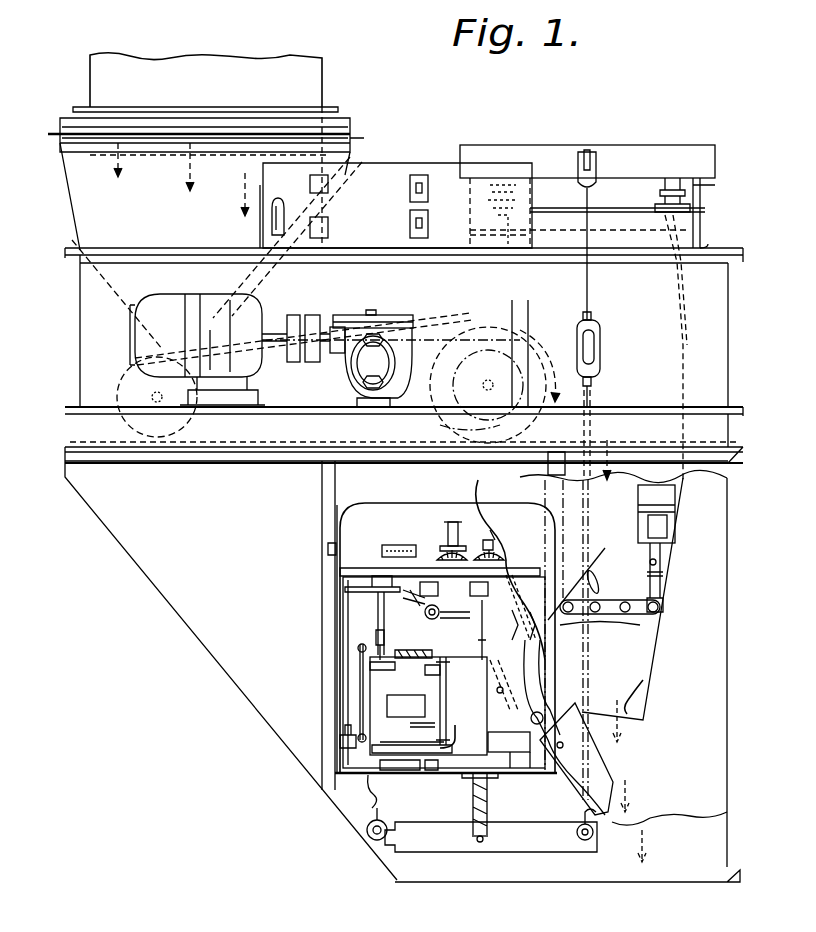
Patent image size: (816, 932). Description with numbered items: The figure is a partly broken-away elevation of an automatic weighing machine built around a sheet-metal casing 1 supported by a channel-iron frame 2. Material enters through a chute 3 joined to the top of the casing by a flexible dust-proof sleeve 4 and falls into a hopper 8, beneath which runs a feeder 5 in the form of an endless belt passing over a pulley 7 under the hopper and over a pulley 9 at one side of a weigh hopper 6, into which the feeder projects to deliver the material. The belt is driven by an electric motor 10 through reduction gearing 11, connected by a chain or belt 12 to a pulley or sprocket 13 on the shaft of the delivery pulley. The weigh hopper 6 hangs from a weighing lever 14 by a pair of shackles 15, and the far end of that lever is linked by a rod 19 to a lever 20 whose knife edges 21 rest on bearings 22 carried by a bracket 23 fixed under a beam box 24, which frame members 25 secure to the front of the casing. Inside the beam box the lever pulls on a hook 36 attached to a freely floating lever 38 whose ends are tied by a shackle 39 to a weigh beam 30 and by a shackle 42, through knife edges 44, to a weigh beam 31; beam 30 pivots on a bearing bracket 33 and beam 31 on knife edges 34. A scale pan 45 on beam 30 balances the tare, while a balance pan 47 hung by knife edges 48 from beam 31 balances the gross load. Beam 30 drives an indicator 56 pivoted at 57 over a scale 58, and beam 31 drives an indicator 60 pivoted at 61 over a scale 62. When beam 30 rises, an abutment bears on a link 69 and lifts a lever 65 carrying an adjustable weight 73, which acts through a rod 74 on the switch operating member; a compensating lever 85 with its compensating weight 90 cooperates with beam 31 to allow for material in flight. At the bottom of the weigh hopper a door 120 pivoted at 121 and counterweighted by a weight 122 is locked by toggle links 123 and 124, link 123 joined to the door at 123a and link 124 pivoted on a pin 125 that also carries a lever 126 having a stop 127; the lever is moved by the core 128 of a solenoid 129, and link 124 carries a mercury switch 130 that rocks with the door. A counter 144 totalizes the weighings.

The casing 1 is at (92, 500).
The frame 2 is at (66, 422).
The chute 3 is at (323, 84).
The flexible dust-proof sleeve 4 is at (330, 130).
The feeder 5 is at (475, 318).
The weigh hopper 6 is at (656, 666).
The pulley 7 is at (122, 369).
The hopper 8 is at (252, 282).
The pulley 9 is at (546, 390).
The electric motor 10 is at (176, 306).
The reduction gearing 11 is at (340, 368).
The chain or belt 12 is at (452, 350).
The pulley or sprocket 13 is at (442, 425).
The weighing lever 14 is at (653, 150).
The shackles 15 is at (520, 192).
The rod 19 is at (590, 288).
The lever 20 is at (530, 848).
The knife edges 21 is at (482, 846).
The bearings 22 is at (484, 832).
The bracket 23 is at (472, 800).
The beam box 24 is at (340, 604).
The frame members 25 is at (322, 574).
The weigh beam 30 is at (447, 680).
The weigh beam 31 is at (490, 644).
The bearing bracket 33 is at (417, 725).
The knife edges 34 is at (376, 636).
The hook 36 is at (370, 785).
The freely floating lever 38 is at (412, 745).
The shackle 39 is at (446, 700).
The shackle 42 is at (368, 680).
The knife edges 44 is at (358, 652).
The scale pan 45 is at (406, 706).
The balance pan 47 is at (509, 742).
The knife edges 48 is at (518, 622).
The indicator 56 is at (442, 550).
The pivot 57 is at (455, 514).
The scale 58 is at (438, 558).
The indicator 60 is at (500, 552).
The pivot 61 is at (490, 520).
The scale 62 is at (506, 558).
The lever 65 is at (400, 772).
The link 69 is at (447, 752).
The weight 73 is at (430, 775).
The rod or link 74 is at (340, 740).
The compensating lever 85 is at (372, 612).
The compensating weight 90 is at (428, 618).
The door 120 is at (610, 776).
The pivot 121 is at (524, 762).
The weight 122 is at (494, 692).
The toggle link 123 is at (560, 672).
The pivotal connection 123a is at (600, 745).
The toggle link 124 is at (568, 614).
The pivot pin 125 is at (595, 614).
The lever 126 is at (652, 616).
The stop 127 is at (625, 614).
The core 128 is at (662, 555).
The solenoid 129 is at (645, 526).
The mercury switch 130 is at (597, 592).
The counter 144 is at (396, 546).